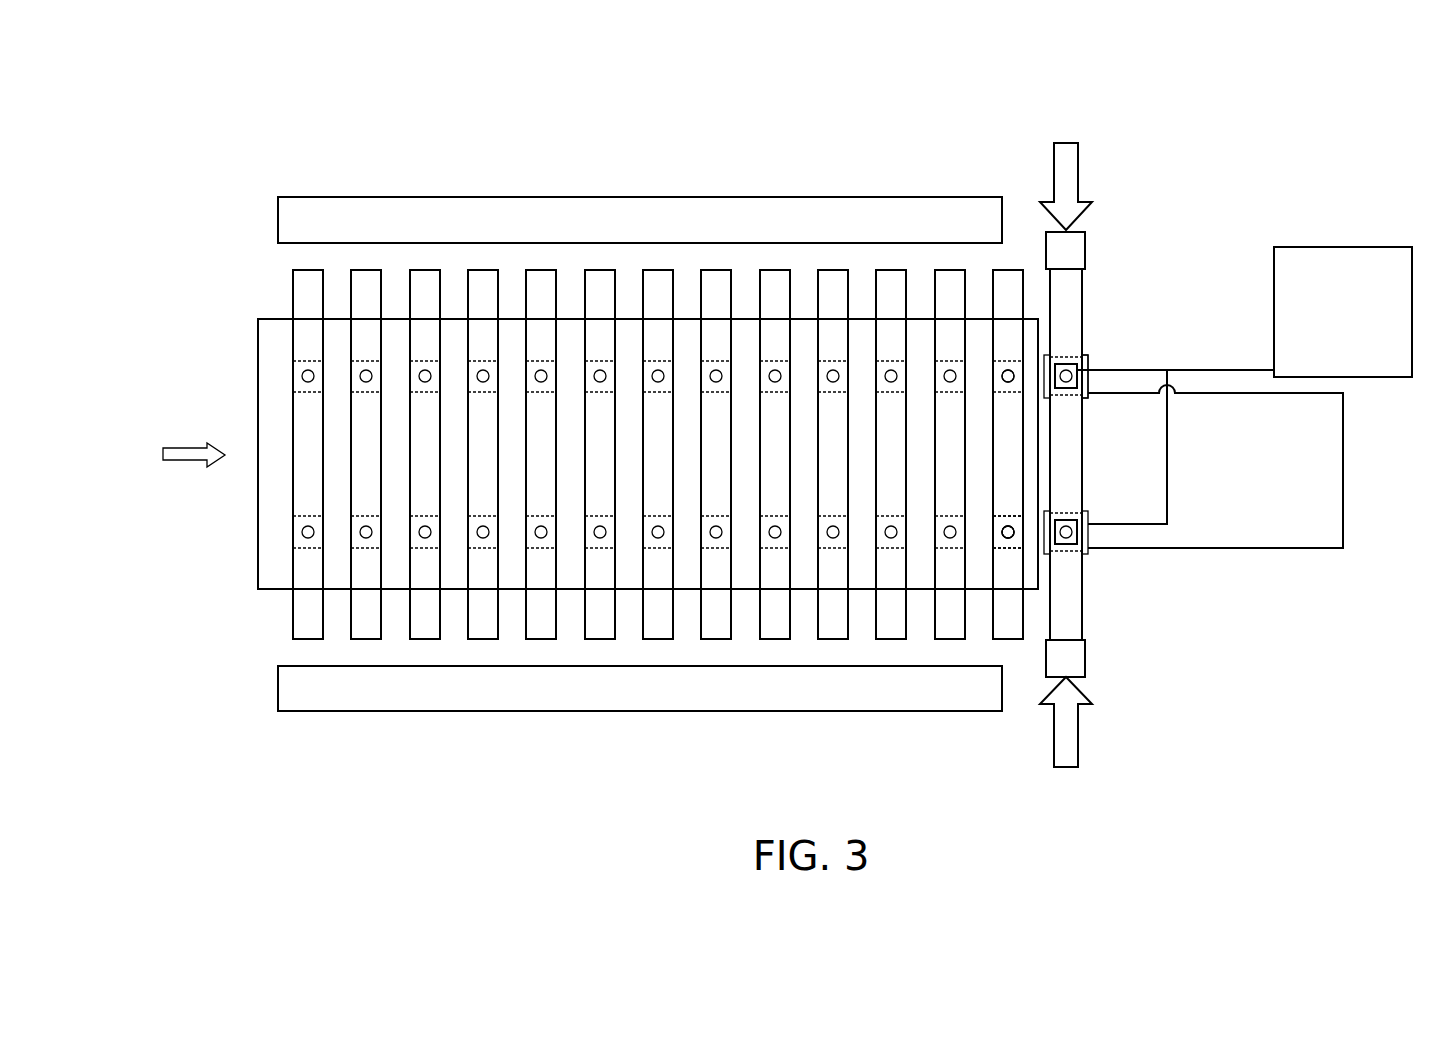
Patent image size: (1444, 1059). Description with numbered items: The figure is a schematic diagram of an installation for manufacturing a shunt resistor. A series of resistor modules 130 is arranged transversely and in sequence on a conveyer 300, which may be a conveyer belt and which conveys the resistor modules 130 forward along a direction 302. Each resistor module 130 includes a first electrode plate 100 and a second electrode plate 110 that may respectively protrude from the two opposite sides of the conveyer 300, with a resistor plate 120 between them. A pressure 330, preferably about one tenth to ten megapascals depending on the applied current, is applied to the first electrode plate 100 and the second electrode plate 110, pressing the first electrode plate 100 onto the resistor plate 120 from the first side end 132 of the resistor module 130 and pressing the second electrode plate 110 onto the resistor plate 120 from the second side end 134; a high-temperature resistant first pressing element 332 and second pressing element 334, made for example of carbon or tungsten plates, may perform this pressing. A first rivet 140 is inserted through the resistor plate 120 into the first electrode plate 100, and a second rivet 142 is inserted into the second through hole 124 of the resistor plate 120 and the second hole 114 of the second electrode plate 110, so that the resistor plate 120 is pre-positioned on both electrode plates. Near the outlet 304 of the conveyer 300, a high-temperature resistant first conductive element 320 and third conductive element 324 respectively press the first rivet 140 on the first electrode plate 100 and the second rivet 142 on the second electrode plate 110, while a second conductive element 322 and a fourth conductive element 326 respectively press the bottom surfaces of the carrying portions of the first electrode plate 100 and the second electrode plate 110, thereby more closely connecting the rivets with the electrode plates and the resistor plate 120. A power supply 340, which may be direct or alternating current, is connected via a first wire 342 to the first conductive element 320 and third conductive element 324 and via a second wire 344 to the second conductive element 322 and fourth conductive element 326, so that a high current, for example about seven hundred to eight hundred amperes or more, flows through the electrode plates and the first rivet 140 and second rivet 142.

The first electrode plate 100 is at (887, 290).
The second electrode plate 110 is at (888, 610).
The second hole 114 is at (1003, 356).
The resistor plate 120 is at (892, 440).
The second through hole 124 is at (1007, 560).
The resistor module 130 is at (688, 103).
The first side end 132 is at (1066, 275).
The second side end 134 is at (1068, 634).
The first rivet 140 is at (902, 262).
The second rivet 142 is at (1004, 538).
The conveyer 300 is at (268, 553).
The direction 302 is at (163, 455).
The outlet 304 is at (1036, 304).
The first conductive element 320 is at (1066, 364).
The second conductive element 322 is at (1090, 368).
The third conductive element 324 is at (1066, 545).
The fourth conductive element 326 is at (1088, 553).
The pressure 330 is at (1080, 176).
The first pressing element 332 is at (1076, 250).
The second pressing element 334 is at (1076, 656).
The power supply 340 is at (1367, 362).
The first wire 342 is at (1236, 370).
The second wire 344 is at (1345, 460).